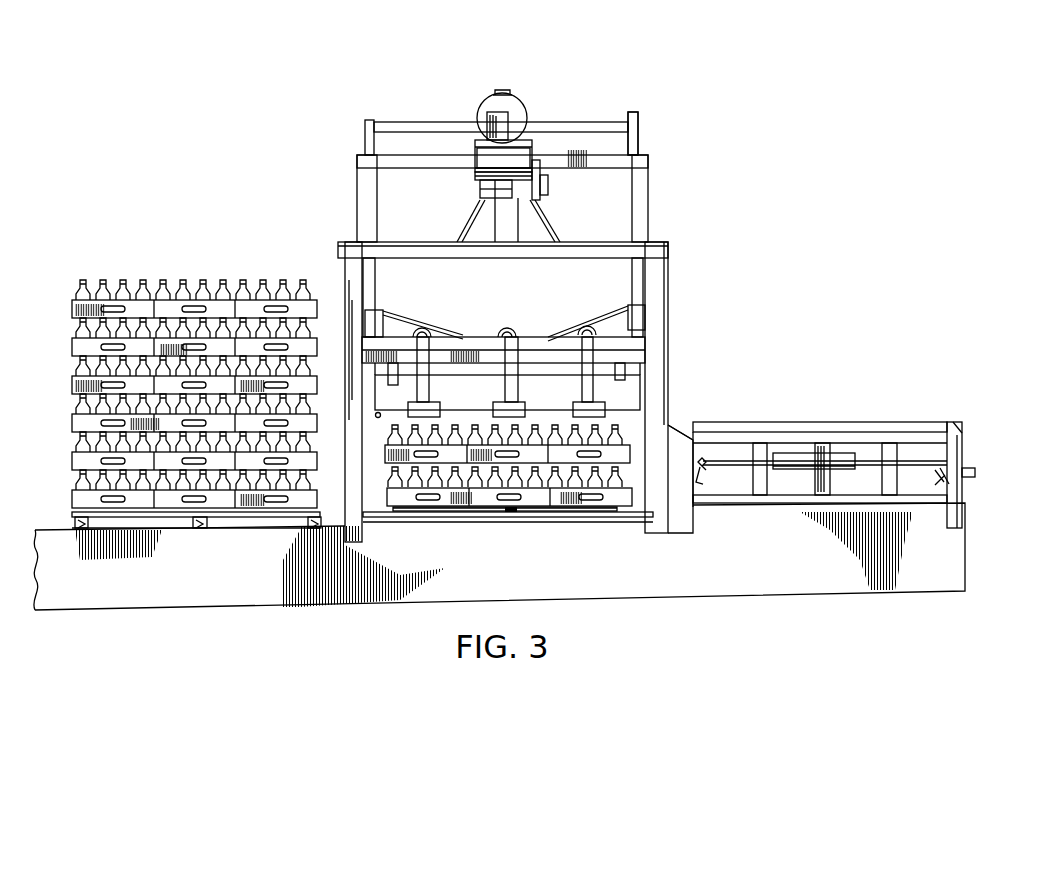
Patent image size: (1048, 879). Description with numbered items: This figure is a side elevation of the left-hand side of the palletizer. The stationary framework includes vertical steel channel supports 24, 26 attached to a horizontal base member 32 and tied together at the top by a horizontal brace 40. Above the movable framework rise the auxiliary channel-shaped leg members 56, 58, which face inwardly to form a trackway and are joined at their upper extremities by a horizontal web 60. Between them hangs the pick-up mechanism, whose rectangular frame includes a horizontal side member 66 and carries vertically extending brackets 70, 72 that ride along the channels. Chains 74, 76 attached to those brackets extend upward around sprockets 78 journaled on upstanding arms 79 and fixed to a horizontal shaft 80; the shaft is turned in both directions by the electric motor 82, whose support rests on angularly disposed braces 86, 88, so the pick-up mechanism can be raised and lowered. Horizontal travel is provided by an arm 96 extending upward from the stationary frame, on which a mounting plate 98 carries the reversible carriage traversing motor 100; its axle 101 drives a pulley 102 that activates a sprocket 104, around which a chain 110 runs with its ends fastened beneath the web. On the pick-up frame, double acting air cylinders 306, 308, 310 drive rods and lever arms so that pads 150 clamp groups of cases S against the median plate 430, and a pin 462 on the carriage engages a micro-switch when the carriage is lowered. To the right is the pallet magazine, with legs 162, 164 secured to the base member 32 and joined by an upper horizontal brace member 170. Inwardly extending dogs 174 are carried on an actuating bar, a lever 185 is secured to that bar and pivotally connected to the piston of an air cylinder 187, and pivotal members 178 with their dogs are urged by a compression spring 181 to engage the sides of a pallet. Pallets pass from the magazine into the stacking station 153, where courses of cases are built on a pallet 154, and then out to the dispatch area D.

The cases S is at (68, 342).
The dispatch area D is at (64, 526).
The vertical steel channel support 24 is at (660, 282).
The vertical steel channel support 26 is at (347, 278).
The horizontal base member 32 is at (762, 547).
The horizontal brace 40 is at (479, 252).
The auxiliary channel-shaped leg member 56 is at (649, 196).
The auxiliary channel-shaped leg member 58 is at (358, 206).
The web 60 is at (421, 168).
The horizontal side member 66 is at (632, 349).
The vertically extending bracket 70 is at (381, 318).
The vertically extending bracket 72 is at (634, 318).
The chain 74 is at (378, 284).
The chain 76 is at (632, 276).
The sprocket 78 is at (365, 128).
The upstanding arm 79 is at (638, 119).
The horizontal shaft 80 is at (580, 122).
The electric motor 82 is at (521, 112).
The angularly disposed brace 86 is at (561, 229).
The angularly disposed brace 88 is at (470, 221).
The arm 96 is at (505, 222).
The mounting plate 98 is at (533, 146).
The carriage traversing motor 100 is at (482, 160).
The axle 101 is at (540, 162).
The pulley 102 is at (542, 192).
The sprocket 104 is at (478, 179).
The chain 110 is at (483, 190).
The pad 150 is at (441, 406).
The stacking station 153 is at (530, 518).
The pallet 154 is at (395, 514).
The leg 162 is at (955, 446).
The leg 164 is at (680, 535).
The upper horizontal brace member 170 is at (718, 434).
The dog 174 is at (704, 473).
The pivotal member 178 is at (942, 482).
The compression spring 181 is at (970, 476).
The lever 185 is at (697, 440).
The air cylinder 187 is at (795, 455).
The double acting air cylinder 306 is at (427, 330).
The double acting air cylinder 308 is at (507, 325).
The double acting air cylinder 310 is at (581, 326).
The median plate 430 is at (636, 396).
The pin 462 is at (377, 417).